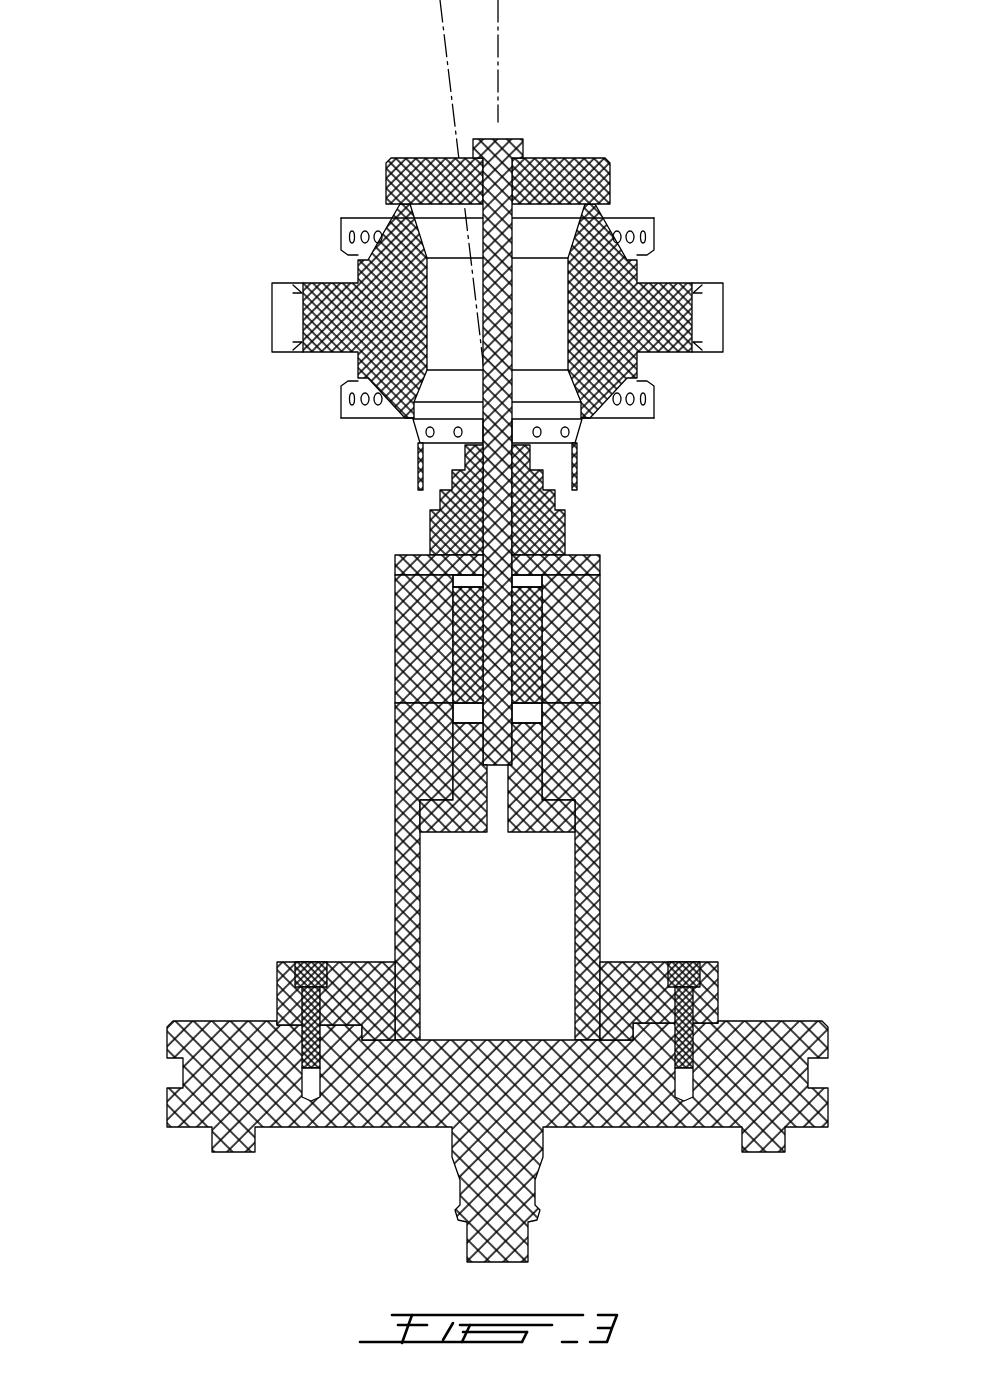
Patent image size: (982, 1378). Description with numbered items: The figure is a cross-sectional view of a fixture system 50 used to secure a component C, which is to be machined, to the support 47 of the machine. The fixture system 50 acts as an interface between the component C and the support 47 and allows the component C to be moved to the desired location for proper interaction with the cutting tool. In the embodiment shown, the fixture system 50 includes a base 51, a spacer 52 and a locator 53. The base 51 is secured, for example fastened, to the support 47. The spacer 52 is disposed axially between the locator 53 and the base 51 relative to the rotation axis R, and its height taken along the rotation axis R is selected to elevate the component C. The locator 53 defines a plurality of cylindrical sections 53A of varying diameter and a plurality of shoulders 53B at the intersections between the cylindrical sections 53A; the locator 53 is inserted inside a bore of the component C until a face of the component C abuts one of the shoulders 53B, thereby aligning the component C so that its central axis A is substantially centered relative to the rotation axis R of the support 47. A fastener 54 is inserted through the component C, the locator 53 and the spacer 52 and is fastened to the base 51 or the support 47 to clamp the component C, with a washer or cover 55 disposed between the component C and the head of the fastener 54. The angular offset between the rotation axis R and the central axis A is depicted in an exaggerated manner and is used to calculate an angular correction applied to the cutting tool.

The support 47 is at (220, 1015).
The fixture system 50 is at (323, 756).
The base 51 is at (392, 757).
The spacer 52 is at (392, 628).
The locator 53 is at (392, 553).
The cylindrical sections 53A is at (537, 460).
The shoulders 53B is at (565, 437).
The fastener 54 is at (468, 148).
The washer or cover 55 is at (618, 180).
The component C is at (243, 288).
The central axis A is at (440, 22).
The rotation axis R is at (503, 22).